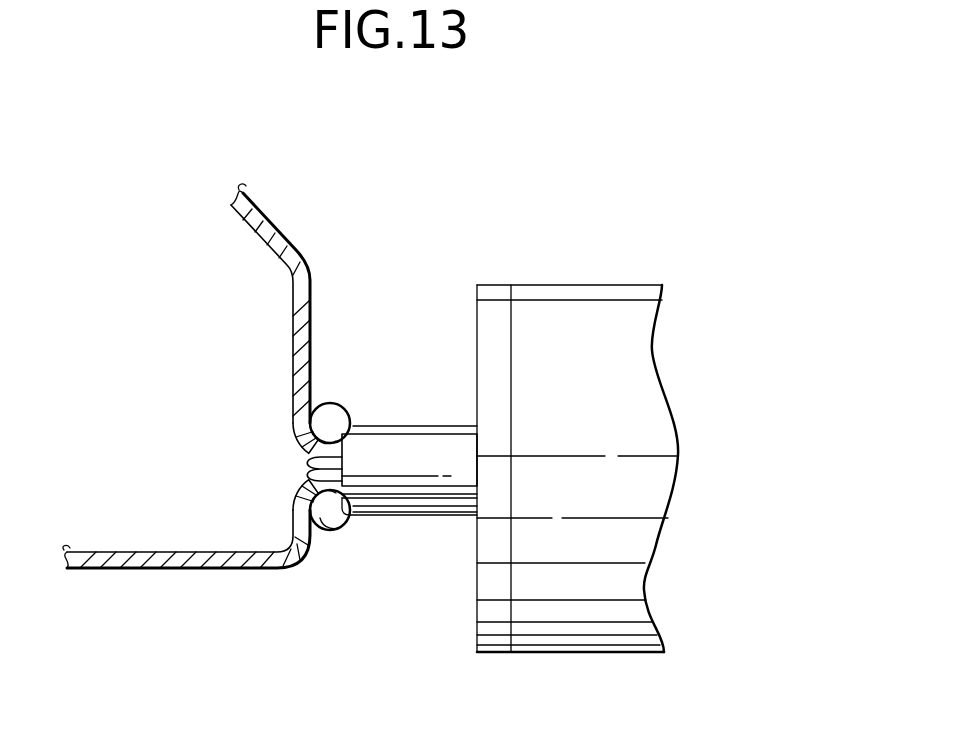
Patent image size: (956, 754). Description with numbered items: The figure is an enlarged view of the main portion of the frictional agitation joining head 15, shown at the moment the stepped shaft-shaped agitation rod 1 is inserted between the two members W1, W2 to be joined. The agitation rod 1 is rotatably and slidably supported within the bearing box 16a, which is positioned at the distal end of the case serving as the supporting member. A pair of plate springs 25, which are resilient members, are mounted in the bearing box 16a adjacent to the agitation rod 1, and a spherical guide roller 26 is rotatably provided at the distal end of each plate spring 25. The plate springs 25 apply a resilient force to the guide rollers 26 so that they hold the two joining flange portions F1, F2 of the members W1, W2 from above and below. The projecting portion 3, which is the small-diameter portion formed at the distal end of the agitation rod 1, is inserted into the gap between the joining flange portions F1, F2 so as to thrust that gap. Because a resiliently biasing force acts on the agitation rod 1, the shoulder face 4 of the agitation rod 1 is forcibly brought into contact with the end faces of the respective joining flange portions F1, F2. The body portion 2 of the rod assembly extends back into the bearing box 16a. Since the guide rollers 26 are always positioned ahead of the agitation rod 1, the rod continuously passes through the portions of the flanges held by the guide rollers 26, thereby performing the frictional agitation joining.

The agitation rod 1 is at (348, 480).
The clip body 2 is at (443, 434).
The projecting portion 3 is at (308, 468).
The shoulder face 4 is at (343, 527).
The joining head 15 is at (627, 662).
The bearing box 16a is at (577, 481).
The plate spring 25 is at (390, 425).
The guide roller 26 is at (335, 403).
The joining flange portion F1 is at (292, 425).
The joining flange portion F2 is at (292, 502).
The member to be joined W1 is at (285, 238).
The member to be joined W2 is at (135, 570).